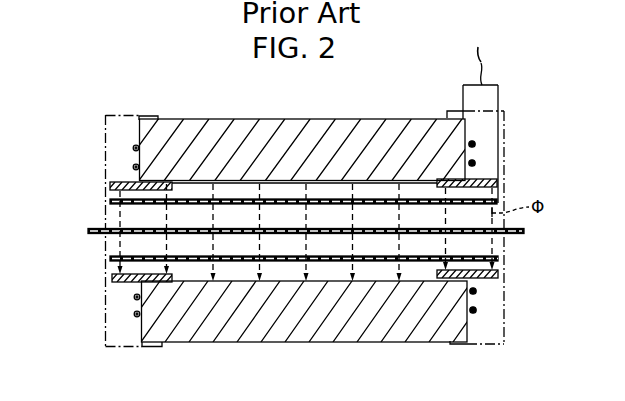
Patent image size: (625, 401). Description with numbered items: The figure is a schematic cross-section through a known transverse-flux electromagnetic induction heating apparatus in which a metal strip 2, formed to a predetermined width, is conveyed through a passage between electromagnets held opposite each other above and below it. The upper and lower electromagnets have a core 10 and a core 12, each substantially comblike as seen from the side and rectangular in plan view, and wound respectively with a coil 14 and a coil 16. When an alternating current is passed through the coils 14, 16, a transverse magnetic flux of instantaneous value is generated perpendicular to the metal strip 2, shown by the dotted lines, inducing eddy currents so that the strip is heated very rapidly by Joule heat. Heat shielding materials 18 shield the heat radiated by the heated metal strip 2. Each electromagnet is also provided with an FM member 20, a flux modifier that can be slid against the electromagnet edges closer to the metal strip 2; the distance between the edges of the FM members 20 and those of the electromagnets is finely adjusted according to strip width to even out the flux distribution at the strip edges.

The metal strip 2 is at (104, 237).
The core 10 is at (215, 126).
The core 12 is at (215, 336).
The coil 14 is at (132, 149).
The coil 16 is at (133, 315).
The heat shielding material 18 is at (495, 200).
The FM member 20 is at (113, 182).